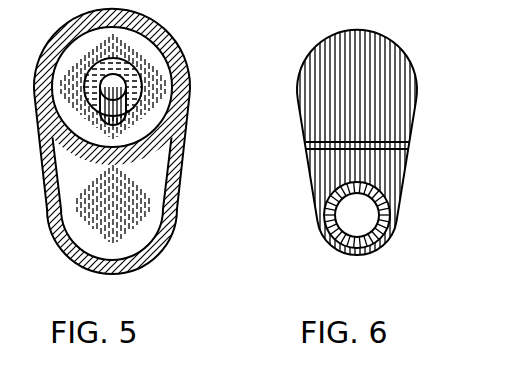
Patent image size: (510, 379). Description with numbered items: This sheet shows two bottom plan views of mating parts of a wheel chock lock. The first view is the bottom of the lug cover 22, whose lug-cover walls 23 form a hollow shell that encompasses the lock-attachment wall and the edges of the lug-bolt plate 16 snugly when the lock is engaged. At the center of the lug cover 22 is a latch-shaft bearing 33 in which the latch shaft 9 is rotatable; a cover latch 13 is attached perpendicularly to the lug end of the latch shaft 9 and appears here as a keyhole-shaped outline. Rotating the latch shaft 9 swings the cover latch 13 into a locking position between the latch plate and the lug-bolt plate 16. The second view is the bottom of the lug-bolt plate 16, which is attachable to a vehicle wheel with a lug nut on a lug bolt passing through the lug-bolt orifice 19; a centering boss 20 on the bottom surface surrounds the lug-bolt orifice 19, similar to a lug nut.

In FIG. 5, the latch shaft 9 is at (134, 75).
In FIG. 5, the cover latch 13 is at (120, 110).
In FIG. 6, the lug-bolt plate 16 is at (393, 126).
In FIG. 6, the lug-bolt orifice 19 is at (355, 213).
In FIG. 6, the centering boss 20 is at (385, 218).
In FIG. 5, the lug cover 22 is at (145, 57).
In FIG. 5, the lug-cover walls 23 is at (172, 180).
In FIG. 5, the latch-shaft bearing 33 is at (116, 77).